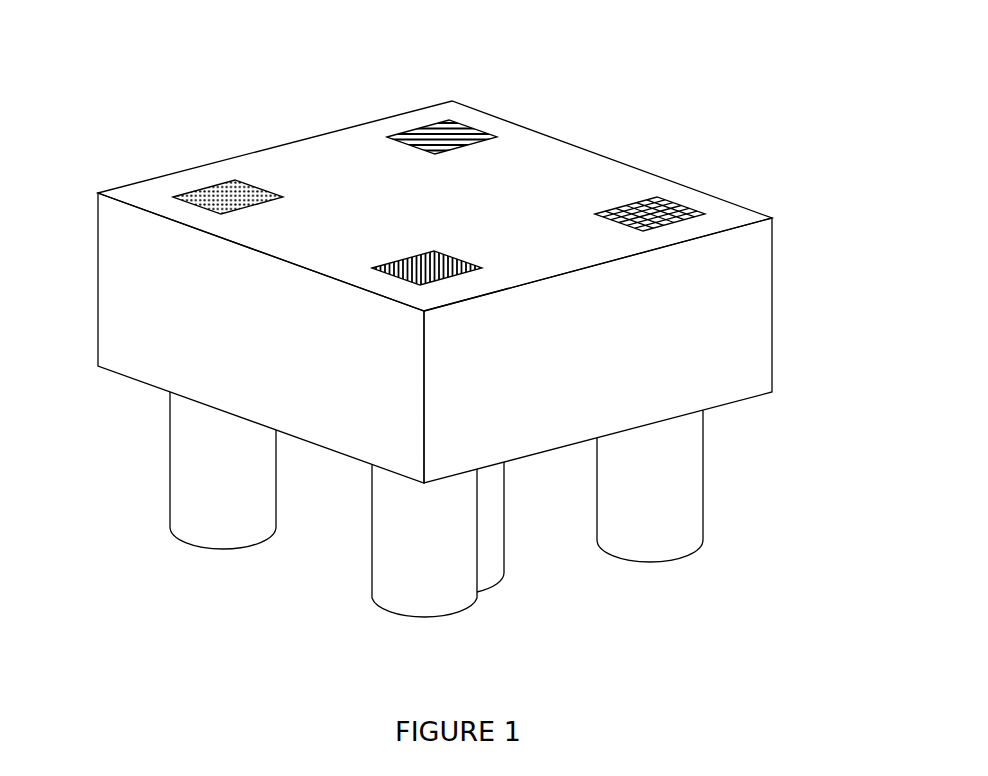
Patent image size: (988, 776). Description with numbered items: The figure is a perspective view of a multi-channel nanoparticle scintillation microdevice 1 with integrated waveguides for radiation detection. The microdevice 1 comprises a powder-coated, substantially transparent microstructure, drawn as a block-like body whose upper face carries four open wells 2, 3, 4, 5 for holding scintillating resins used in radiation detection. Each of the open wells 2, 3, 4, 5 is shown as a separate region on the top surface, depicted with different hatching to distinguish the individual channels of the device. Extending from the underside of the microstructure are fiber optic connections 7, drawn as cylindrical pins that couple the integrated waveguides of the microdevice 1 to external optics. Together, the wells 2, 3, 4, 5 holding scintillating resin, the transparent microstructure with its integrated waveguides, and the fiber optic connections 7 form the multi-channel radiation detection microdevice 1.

The multi-channel nanoparticle scintillation microdevice 1 is at (786, 366).
The open well for holding scintillating resin 2 is at (650, 204).
The open well for holding scintillating resin 3 is at (413, 259).
The open well for holding scintillating resin 4 is at (455, 120).
The open well for holding scintillating resin 5 is at (217, 182).
The fiber optic connection 7 is at (220, 518).